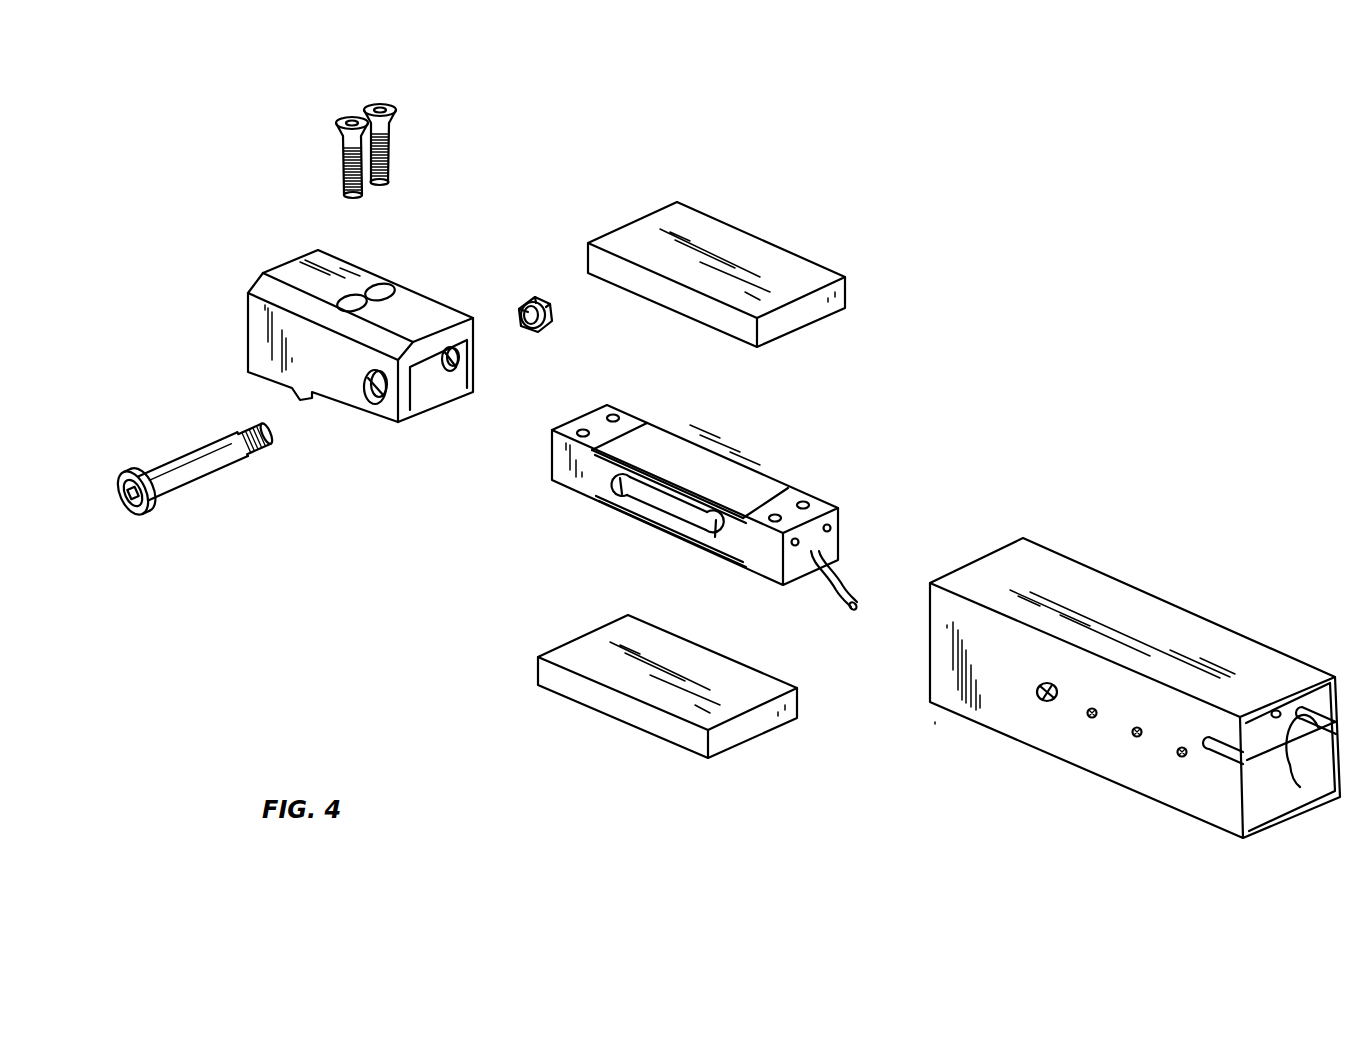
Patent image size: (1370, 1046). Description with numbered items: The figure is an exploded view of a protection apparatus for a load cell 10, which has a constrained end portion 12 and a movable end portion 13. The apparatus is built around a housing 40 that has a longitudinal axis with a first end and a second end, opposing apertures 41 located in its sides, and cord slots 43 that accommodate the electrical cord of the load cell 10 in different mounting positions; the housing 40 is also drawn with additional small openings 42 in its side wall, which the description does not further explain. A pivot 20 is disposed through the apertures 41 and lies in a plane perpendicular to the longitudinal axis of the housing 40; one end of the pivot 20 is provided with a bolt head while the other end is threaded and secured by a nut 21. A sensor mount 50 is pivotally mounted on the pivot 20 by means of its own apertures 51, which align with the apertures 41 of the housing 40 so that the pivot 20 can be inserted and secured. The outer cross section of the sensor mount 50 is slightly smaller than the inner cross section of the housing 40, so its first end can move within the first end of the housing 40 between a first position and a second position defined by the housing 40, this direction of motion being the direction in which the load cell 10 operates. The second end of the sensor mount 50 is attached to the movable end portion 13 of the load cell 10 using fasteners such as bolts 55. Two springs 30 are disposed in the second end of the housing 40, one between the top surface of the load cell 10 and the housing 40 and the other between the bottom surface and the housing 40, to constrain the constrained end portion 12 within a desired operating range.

The load cell 10 is at (822, 444).
The constrained end portion 12 is at (765, 553).
The movable end portion 13 is at (573, 475).
The pivot 20 is at (192, 468).
The nut 21 is at (553, 309).
The spring 30 is at (752, 258).
The housing 40 is at (1112, 588).
The apertures 41 is at (1037, 702).
The screw holes 42 is at (1177, 755).
The cord slots 43 is at (1290, 745).
The sensor mount 50 is at (265, 337).
The apertures 51 is at (441, 374).
The bolts 55 is at (373, 102).